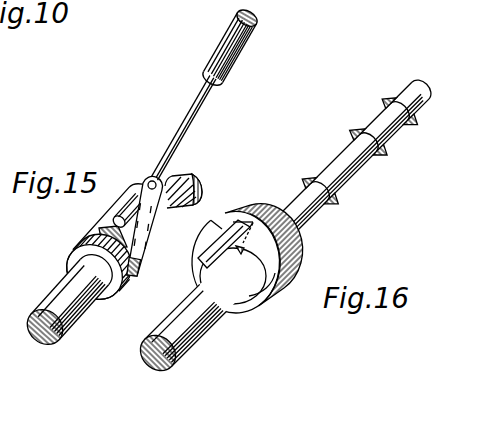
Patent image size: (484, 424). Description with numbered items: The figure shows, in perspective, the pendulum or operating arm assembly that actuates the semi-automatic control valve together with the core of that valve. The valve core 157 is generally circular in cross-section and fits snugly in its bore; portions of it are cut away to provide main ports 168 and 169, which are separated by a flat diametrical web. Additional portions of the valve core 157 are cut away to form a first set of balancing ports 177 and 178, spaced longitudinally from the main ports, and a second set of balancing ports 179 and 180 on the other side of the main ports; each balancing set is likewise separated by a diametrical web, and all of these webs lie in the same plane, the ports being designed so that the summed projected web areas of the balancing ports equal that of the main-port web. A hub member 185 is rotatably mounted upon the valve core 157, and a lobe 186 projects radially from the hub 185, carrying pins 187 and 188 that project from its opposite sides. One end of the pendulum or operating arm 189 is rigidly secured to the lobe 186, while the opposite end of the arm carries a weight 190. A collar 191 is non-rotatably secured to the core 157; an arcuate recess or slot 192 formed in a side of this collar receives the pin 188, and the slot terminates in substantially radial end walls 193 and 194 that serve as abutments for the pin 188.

In FIG. 15, the valve core 157 is at (50, 340).
In FIG. 16, the valve core 157 is at (201, 330).
In FIG. 16, the main port 168 is at (352, 139).
In FIG. 16, the main port 169 is at (379, 155).
In FIG. 16, the balancing port 177 is at (386, 103).
In FIG. 16, the balancing port 178 is at (408, 121).
In FIG. 16, the balancing port 179 is at (309, 182).
In FIG. 16, the balancing port 180 is at (335, 202).
In FIG. 15, the hub member 185 is at (78, 265).
In FIG. 15, the lobe 186 is at (99, 242).
In FIG. 15, the pin 187 is at (120, 214).
In FIG. 15, the pin 188 is at (183, 205).
In FIG. 15, the pendulum or operating arm 189 is at (200, 96).
In FIG. 15, the weight 190 is at (233, 53).
In FIG. 16, the collar 191 is at (273, 298).
In FIG. 16, the arcuate recess or slot 192 is at (233, 220).
In FIG. 16, the radial end wall 193 is at (203, 257).
In FIG. 16, the radial end wall 194 is at (245, 255).